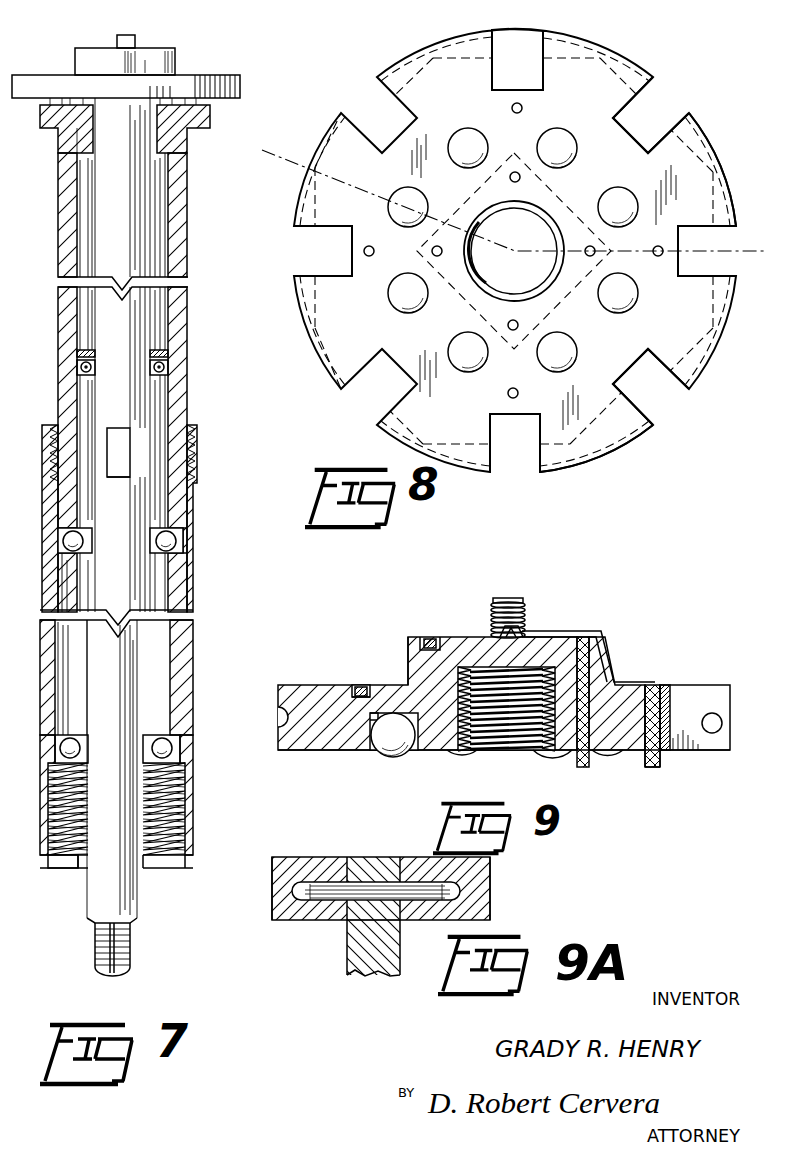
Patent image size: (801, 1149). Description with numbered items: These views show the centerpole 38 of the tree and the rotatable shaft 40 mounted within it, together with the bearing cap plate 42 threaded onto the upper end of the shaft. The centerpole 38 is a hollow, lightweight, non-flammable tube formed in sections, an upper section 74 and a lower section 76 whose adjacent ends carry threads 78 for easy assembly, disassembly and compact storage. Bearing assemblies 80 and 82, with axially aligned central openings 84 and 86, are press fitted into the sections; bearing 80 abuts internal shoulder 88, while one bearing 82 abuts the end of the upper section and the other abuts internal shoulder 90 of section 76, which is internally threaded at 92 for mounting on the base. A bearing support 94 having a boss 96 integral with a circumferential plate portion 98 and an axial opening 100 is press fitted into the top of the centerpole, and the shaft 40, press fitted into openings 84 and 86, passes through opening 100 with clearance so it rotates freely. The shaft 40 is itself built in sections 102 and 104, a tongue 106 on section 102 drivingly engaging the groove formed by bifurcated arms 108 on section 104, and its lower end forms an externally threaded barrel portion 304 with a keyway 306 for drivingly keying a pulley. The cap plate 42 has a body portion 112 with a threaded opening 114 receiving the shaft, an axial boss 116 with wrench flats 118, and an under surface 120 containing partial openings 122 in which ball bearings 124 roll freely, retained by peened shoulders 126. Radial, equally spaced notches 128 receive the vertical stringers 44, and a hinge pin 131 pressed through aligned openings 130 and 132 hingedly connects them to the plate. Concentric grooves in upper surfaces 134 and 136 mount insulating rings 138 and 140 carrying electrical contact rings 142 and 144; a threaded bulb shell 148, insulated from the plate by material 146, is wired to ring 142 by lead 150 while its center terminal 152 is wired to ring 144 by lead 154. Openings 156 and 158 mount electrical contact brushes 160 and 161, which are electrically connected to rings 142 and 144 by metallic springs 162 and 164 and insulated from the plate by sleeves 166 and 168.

In FIG. 7, the centerpole 38 is at (194, 407).
In FIG. 7, the rotatable shaft 40 is at (142, 905).
In FIG. 7, the bearing cap plate 42 is at (190, 56).
In FIG. 8, the bearing cap plate 42 is at (381, 63).
In FIG. 9, the bearing cap plate 42 is at (606, 617).
In FIG. 9A, the bearing cap plate 42 is at (327, 853).
In FIG. 9A, the vertical stringers 44 is at (346, 944).
In FIG. 7, the centerpole section 74 is at (188, 320).
In FIG. 7, the lower centerpole section 76 is at (193, 640).
In FIG. 7, the threads 78 is at (191, 447).
In FIG. 7, the bearing assembly 80 is at (168, 367).
In FIG. 7, the bearing assemblies 82 is at (183, 543).
In FIG. 7, the central opening 84 is at (151, 371).
In FIG. 7, the central opening 86 is at (92, 537).
In FIG. 7, the internal shoulder 88 is at (94, 353).
In FIG. 7, the internal shoulder 90 is at (63, 738).
In FIG. 7, the internal threads 92 is at (72, 868).
In FIG. 7, the bearing support 94 is at (213, 118).
In FIG. 7, the axially extending boss 96 is at (89, 141).
In FIG. 7, the circumferential plate portion 98 is at (50, 129).
In FIG. 7, the axially extending opening 100 is at (96, 153).
In FIG. 7, the shaft section 102 is at (129, 409).
In FIG. 7, the shaft section 104 is at (121, 587).
In FIG. 7, the tongue 106 is at (118, 477).
In FIG. 7, the bifurcated arms 108 is at (126, 428).
In FIG. 9, the body portion 112 is at (312, 686).
In FIG. 8, the threaded opening 114 is at (535, 292).
In FIG. 9, the threaded opening 114 is at (507, 752).
In FIG. 9, the axial boss 116 is at (463, 646).
In FIG. 9, the wrench flats 118 is at (409, 652).
In FIG. 9, the under surface 120 is at (328, 751).
In FIG. 9, the partial openings 122 is at (371, 719).
In FIG. 8, the ball bearings 124 is at (556, 130).
In FIG. 9, the ball bearings 124 is at (385, 755).
In FIG. 9, the bearing retention shoulder 126 is at (415, 753).
In FIG. 8, the notches 128 is at (690, 116).
In FIG. 9, the notches 128 is at (700, 686).
In FIG. 9A, the notches 128 is at (357, 858).
In FIG. 8, the hinge pin openings 130 is at (654, 89).
In FIG. 9, the hinge pin openings 130 is at (710, 717).
In FIG. 9A, the hinge pin openings 130 is at (442, 905).
In FIG. 9A, the hinge pin 131 is at (292, 893).
In FIG. 9A, the stringer opening 132 is at (380, 881).
In FIG. 9, the upper surface 134 is at (284, 686).
In FIG. 9, the upper surface 136 is at (423, 637).
In FIG. 9, the insulating ring 138 is at (371, 687).
In FIG. 9, the insulating ring 140 is at (438, 637).
In FIG. 9, the electrical contact ring 142 is at (359, 686).
In FIG. 9, the electrical contact ring 144 is at (430, 637).
In FIG. 9, the insulating material 146 is at (499, 645).
In FIG. 7, the threaded bulb shell 148 is at (136, 40).
In FIG. 9, the threaded bulb shell 148 is at (525, 603).
In FIG. 9, the electrical lead 150 is at (614, 675).
In FIG. 9, the center terminal 152 is at (510, 603).
In FIG. 9, the electrical lead 154 is at (520, 641).
In FIG. 9, the openings 156 is at (661, 719).
In FIG. 9, the openings 158 is at (588, 688).
In FIG. 8, the electrical contact brushes 160 is at (507, 392).
In FIG. 9, the electrical contact brushes 160 is at (660, 767).
In FIG. 8, the electrical contact brushes 161 is at (509, 323).
In FIG. 9, the electrical contact brushes 161 is at (585, 768).
In FIG. 9, the metallic springs 162 is at (666, 704).
In FIG. 9, the metallic springs 164 is at (590, 708).
In FIG. 9, the insulating sleeves 166 is at (647, 760).
In FIG. 9, the insulating sleeves 168 is at (571, 752).
In FIG. 7, the threaded barrel portion 304 is at (97, 957).
In FIG. 7, the keyway 306 is at (113, 975).